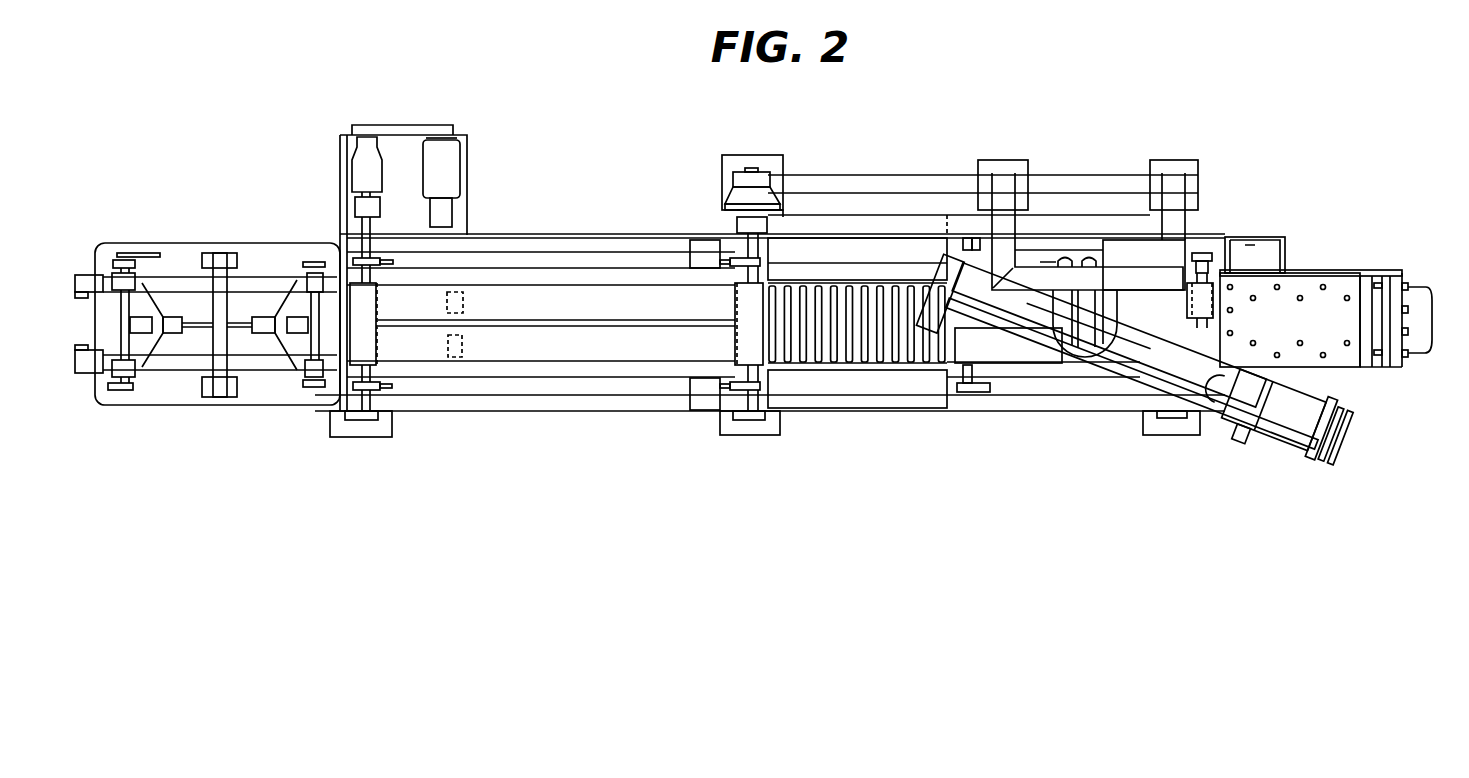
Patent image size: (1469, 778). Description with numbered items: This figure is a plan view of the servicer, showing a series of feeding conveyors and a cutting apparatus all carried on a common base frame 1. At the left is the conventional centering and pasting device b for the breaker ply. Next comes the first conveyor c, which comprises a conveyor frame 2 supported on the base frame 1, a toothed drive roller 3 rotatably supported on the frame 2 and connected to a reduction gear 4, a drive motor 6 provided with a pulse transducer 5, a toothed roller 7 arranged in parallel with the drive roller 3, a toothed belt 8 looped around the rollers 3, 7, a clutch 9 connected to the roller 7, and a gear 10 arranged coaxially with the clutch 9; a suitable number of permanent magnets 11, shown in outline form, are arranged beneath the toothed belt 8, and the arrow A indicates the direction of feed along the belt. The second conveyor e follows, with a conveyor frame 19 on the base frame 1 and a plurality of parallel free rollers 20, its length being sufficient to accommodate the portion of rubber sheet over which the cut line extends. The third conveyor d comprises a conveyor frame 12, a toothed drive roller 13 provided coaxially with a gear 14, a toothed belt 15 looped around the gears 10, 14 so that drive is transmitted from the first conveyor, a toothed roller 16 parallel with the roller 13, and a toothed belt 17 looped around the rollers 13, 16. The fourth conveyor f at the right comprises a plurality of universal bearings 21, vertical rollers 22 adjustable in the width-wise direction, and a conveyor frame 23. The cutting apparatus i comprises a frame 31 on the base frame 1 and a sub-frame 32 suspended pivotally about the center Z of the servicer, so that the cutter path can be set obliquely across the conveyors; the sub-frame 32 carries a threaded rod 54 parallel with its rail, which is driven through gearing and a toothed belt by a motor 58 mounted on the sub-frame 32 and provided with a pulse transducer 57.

The common base frame 1 is at (547, 233).
The conveyor frame 2 is at (584, 268).
The toothed drive roller 3 is at (380, 343).
The reduction gear 4 is at (380, 184).
The pulse transducer 5 is at (453, 214).
The drive motor 6 is at (462, 169).
The toothed roller 7 is at (733, 342).
The toothed belt 8 is at (608, 342).
The clutch 9 is at (760, 175).
The gear 10 is at (770, 230).
The permanent magnets 11 is at (463, 340).
The conveyor frame 12 is at (1032, 378).
The toothed drive roller 13 is at (967, 347).
The gear 14 is at (967, 213).
The toothed belt 15 is at (872, 215).
The toothed roller 16 is at (1203, 295).
The toothed belt 17 is at (1003, 365).
The conveyor frame 19 is at (817, 378).
The free rollers 20 is at (840, 355).
The universal bearings 21 is at (1324, 285).
The vertical rollers 22 is at (1432, 288).
The conveyor frame 23 is at (1373, 285).
The frame 31 is at (1113, 243).
The sub-frame 32 is at (1143, 405).
The threaded rod 54 is at (1120, 377).
The pulse transducer 57 is at (1192, 397).
The motor 58 is at (1382, 340).
The feed direction A is at (590, 323).
The centering and pasting device b is at (188, 243).
The first conveyor c is at (528, 418).
The third conveyor d is at (1058, 418).
The second conveyor e is at (870, 418).
The fourth conveyor f is at (1413, 268).
The cutting apparatus i is at (1204, 444).
The center of the servicer Z is at (1082, 320).